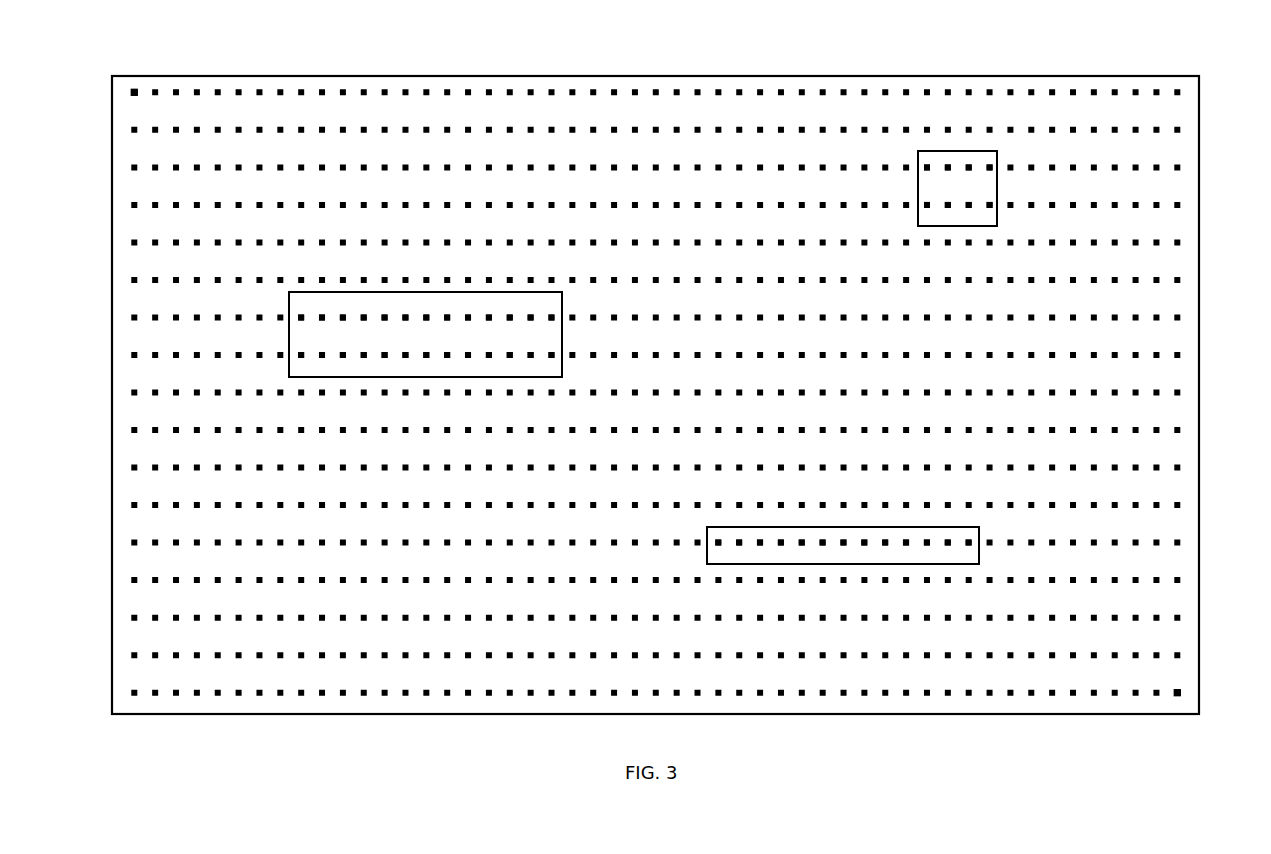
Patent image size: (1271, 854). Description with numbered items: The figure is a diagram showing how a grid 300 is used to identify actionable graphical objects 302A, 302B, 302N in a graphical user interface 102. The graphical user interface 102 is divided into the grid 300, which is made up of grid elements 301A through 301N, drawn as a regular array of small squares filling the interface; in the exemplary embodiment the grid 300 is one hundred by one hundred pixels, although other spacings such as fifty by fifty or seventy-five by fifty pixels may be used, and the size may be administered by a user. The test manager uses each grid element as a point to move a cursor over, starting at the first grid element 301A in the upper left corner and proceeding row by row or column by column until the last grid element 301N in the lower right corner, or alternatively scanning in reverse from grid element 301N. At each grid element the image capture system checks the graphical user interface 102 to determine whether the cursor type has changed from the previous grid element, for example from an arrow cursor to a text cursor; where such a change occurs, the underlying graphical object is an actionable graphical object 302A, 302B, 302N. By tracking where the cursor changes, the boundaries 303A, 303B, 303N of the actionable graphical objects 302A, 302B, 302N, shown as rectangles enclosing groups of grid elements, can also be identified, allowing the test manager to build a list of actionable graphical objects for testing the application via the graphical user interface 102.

The graphical user interface 102 is at (670, 77).
The grid 300 is at (880, 113).
The grid element 301A is at (134, 90).
The grid element 301N is at (1177, 690).
The actionable graphical object 302A is at (953, 157).
The boundary 303A is at (993, 180).
The actionable graphical object 302B is at (513, 302).
The boundary 303B is at (562, 323).
The actionable graphical object 302N is at (927, 535).
The boundary 303N is at (979, 550).